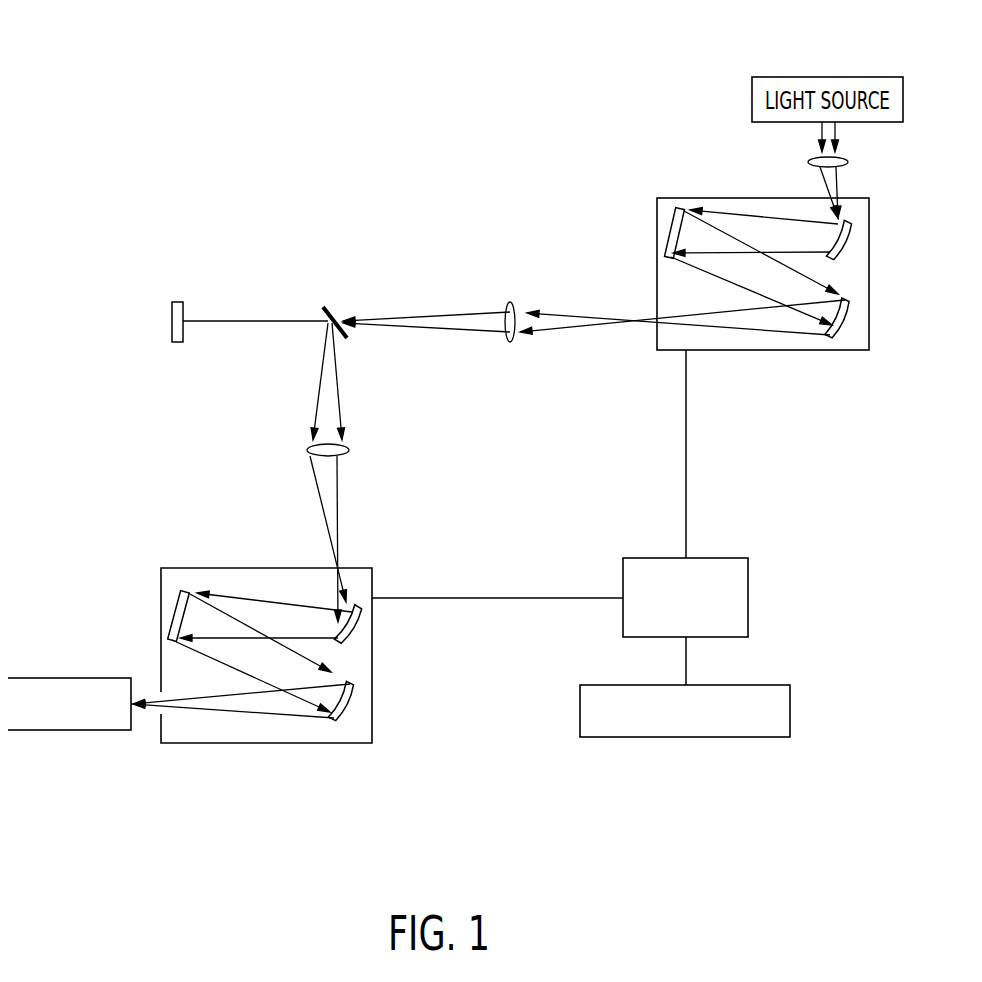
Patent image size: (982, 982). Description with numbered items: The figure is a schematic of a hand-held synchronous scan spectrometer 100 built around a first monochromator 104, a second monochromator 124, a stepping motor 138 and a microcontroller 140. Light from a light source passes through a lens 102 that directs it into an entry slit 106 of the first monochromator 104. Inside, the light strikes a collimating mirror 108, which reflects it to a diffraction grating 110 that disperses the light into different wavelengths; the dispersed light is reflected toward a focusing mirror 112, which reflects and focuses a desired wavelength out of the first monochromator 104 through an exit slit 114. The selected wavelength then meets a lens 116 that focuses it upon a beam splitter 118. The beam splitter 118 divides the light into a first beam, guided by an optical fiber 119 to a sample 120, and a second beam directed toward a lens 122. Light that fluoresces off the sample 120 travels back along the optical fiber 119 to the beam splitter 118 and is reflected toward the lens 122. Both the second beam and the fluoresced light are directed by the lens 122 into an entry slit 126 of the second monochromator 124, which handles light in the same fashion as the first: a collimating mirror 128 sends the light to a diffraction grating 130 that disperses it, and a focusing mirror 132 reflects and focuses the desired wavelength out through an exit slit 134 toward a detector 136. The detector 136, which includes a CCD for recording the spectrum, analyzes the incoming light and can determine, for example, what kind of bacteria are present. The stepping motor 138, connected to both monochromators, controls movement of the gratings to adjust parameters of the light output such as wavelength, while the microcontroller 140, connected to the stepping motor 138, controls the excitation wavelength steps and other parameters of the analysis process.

The hand-held synchronous scan spectrometer 100 is at (182, 93).
The lens 102 is at (808, 163).
The first monochromator 104 is at (869, 352).
The entry slit 106 is at (840, 200).
The collimating mirror 108 is at (855, 237).
The diffraction grating 110 is at (677, 216).
The focusing mirror 112 is at (847, 312).
The exit slit 114 is at (657, 318).
The lens 116 is at (509, 302).
The beam splitter 118 is at (344, 338).
The optical fiber 119 is at (250, 320).
The sample 120 is at (172, 320).
The lens 122 is at (350, 451).
The second monochromator 124 is at (270, 745).
The entry slit 126 is at (338, 567).
The collimating mirror 128 is at (363, 617).
The diffraction grating 130 is at (178, 607).
The focusing mirror 132 is at (347, 717).
The exit slit 134 is at (162, 697).
The detector 136 is at (68, 730).
The stepping motor 138 is at (749, 598).
The microcontroller 140 is at (790, 712).